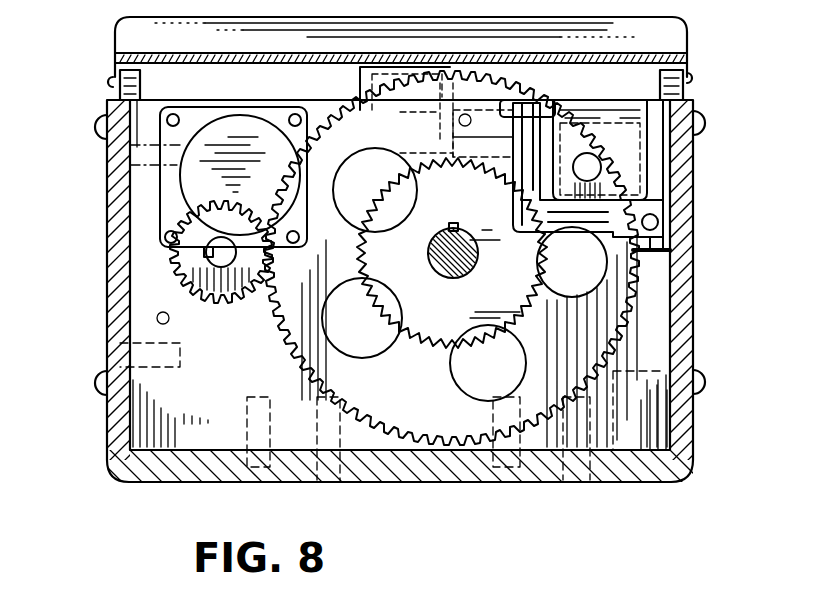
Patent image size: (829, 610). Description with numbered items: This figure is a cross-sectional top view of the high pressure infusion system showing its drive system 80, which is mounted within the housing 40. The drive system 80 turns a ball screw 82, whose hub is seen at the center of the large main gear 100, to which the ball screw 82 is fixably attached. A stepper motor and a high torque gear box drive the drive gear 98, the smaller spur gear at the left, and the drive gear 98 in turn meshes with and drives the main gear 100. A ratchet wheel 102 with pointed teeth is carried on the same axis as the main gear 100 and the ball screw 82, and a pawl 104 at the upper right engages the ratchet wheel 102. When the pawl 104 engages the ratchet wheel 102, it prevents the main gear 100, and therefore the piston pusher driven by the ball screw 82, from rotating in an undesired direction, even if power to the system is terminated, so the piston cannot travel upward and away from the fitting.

The housing 40 is at (648, 487).
The drive system 80 is at (646, 329).
The ball screw 82 is at (447, 268).
The drive gear 98 is at (190, 277).
The main gear 100 is at (543, 373).
The ratchet wheel 102 is at (507, 262).
The pawl 104 is at (490, 150).